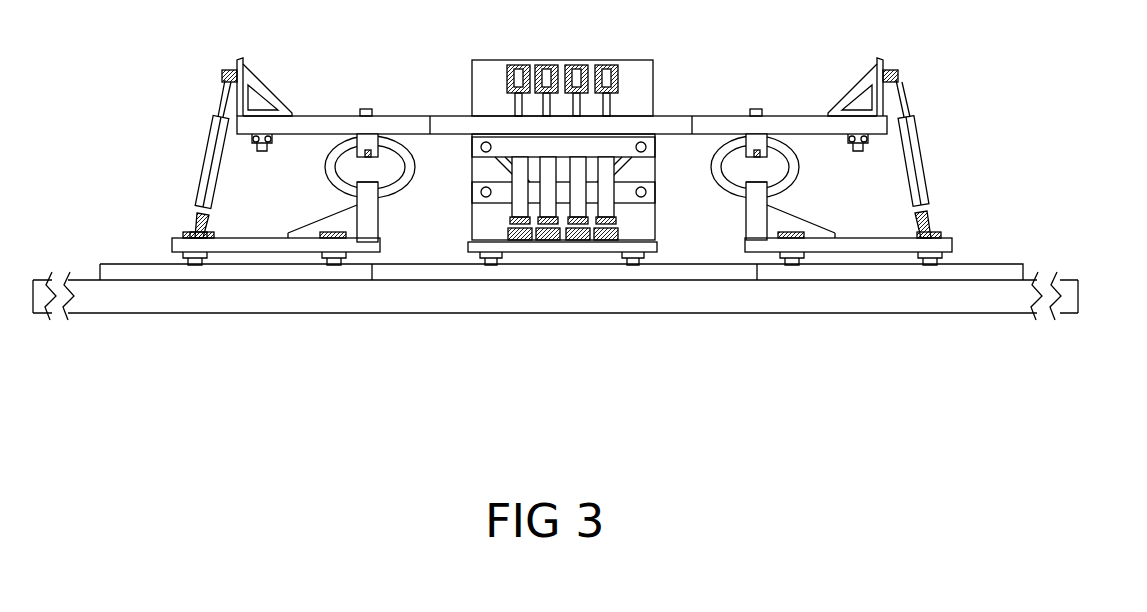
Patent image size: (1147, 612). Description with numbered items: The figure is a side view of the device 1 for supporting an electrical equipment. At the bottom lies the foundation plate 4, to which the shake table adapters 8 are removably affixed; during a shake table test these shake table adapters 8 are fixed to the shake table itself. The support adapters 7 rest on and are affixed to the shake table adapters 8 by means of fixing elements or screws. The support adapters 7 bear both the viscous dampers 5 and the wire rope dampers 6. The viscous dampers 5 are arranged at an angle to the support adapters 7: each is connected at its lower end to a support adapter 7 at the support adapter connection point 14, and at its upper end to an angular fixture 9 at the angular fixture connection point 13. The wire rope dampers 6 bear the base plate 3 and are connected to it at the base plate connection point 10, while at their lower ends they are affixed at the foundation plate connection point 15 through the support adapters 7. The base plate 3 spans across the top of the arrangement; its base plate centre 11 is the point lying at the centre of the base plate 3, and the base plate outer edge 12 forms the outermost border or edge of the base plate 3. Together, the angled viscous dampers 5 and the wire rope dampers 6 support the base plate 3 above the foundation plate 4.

The device 1 is at (130, 386).
The base plate 3 is at (385, 122).
The foundation plate 4 is at (1076, 282).
The viscous dampers 5 is at (203, 146).
The wire rope dampers 6 is at (410, 174).
The support adapters 7 is at (285, 238).
The shake table adapters 8 is at (978, 266).
The angular fixtures 9 is at (878, 66).
The base plate connection point 10 is at (766, 132).
The base plate centre 11 is at (557, 125).
The base plate outer edge 12 is at (832, 128).
The angular fixture connection point 13 is at (230, 70).
The support adapter connection point 14 is at (192, 238).
The foundation plate connection point 15 is at (745, 240).